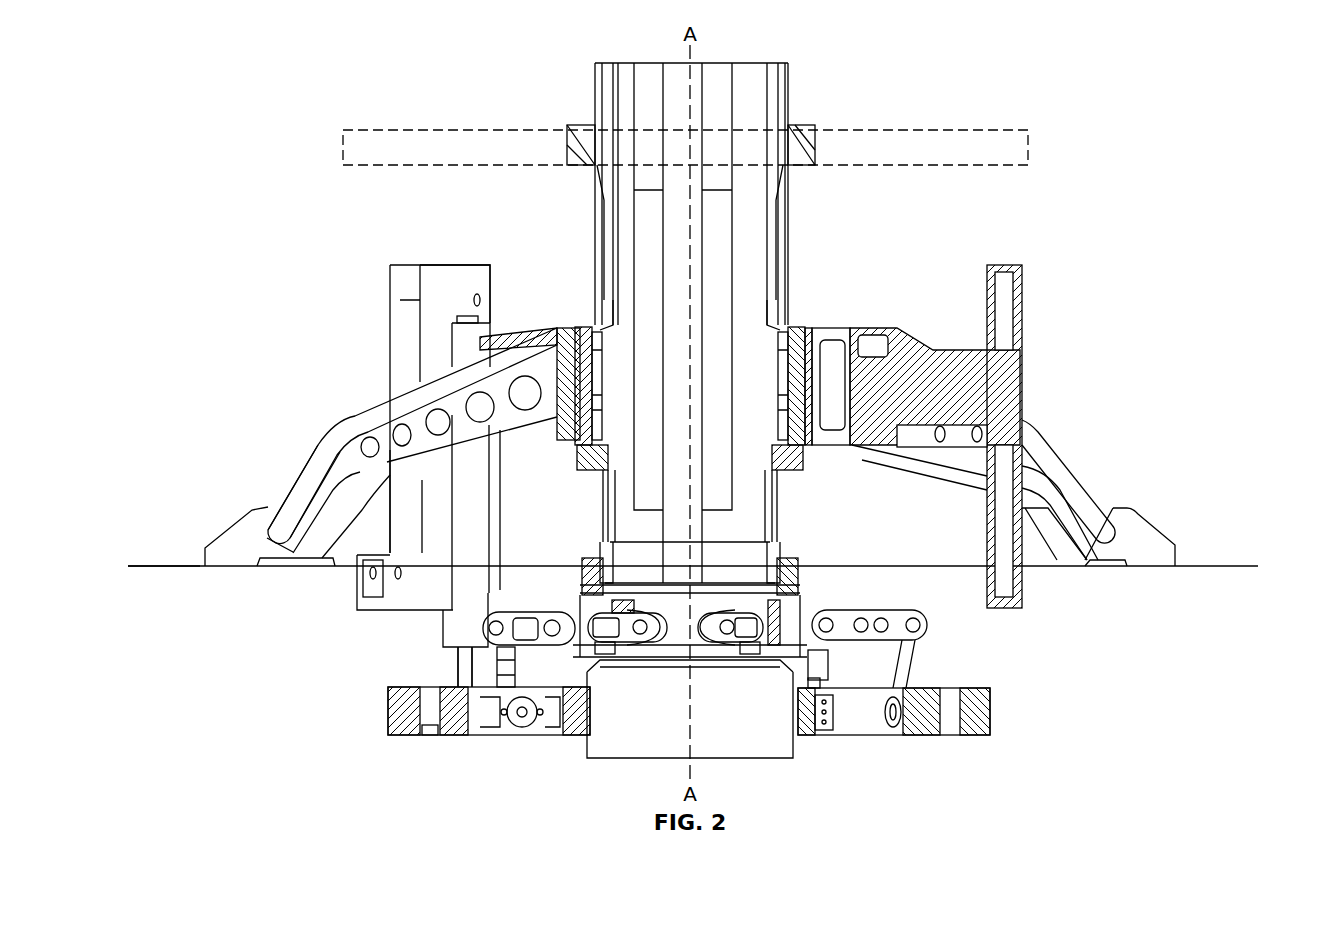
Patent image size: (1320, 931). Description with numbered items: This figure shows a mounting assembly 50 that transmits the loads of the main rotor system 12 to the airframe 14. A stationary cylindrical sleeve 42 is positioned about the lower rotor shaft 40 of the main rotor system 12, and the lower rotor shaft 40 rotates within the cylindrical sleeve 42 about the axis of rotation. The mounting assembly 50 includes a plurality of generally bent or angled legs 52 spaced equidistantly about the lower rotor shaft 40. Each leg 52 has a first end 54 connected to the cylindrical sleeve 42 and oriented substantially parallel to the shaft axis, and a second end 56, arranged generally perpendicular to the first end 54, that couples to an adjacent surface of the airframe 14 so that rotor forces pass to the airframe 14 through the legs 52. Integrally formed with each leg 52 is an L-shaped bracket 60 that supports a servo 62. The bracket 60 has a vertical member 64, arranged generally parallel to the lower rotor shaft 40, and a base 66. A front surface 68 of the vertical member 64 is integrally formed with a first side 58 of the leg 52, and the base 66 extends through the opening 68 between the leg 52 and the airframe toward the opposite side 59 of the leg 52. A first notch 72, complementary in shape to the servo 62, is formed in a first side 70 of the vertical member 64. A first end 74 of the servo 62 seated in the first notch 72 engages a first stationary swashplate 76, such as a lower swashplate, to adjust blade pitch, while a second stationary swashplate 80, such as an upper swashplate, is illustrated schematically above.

The main rotor system 12 is at (808, 75).
The airframe 14 is at (1210, 566).
The lower rotor shaft 40 is at (748, 240).
The cylindrical sleeve 42 is at (795, 330).
The mounting assembly 50 is at (245, 118).
The leg 52 is at (328, 430).
The first end 54 is at (583, 328).
The second end 56 is at (215, 545).
The first side 58 is at (327, 558).
The opposite side 59 is at (298, 485).
The L-shaped bracket 60 is at (378, 210).
The servo 62 is at (483, 490).
The vertical member 64 is at (420, 265).
The base 66 is at (405, 593).
The front surface 68 is at (400, 330).
The first side 70 is at (452, 288).
The first notch 72 is at (478, 318).
The first end 74 is at (452, 683).
The first stationary swashplate 76 is at (390, 268).
The second stationary swashplate 80 is at (1030, 145).